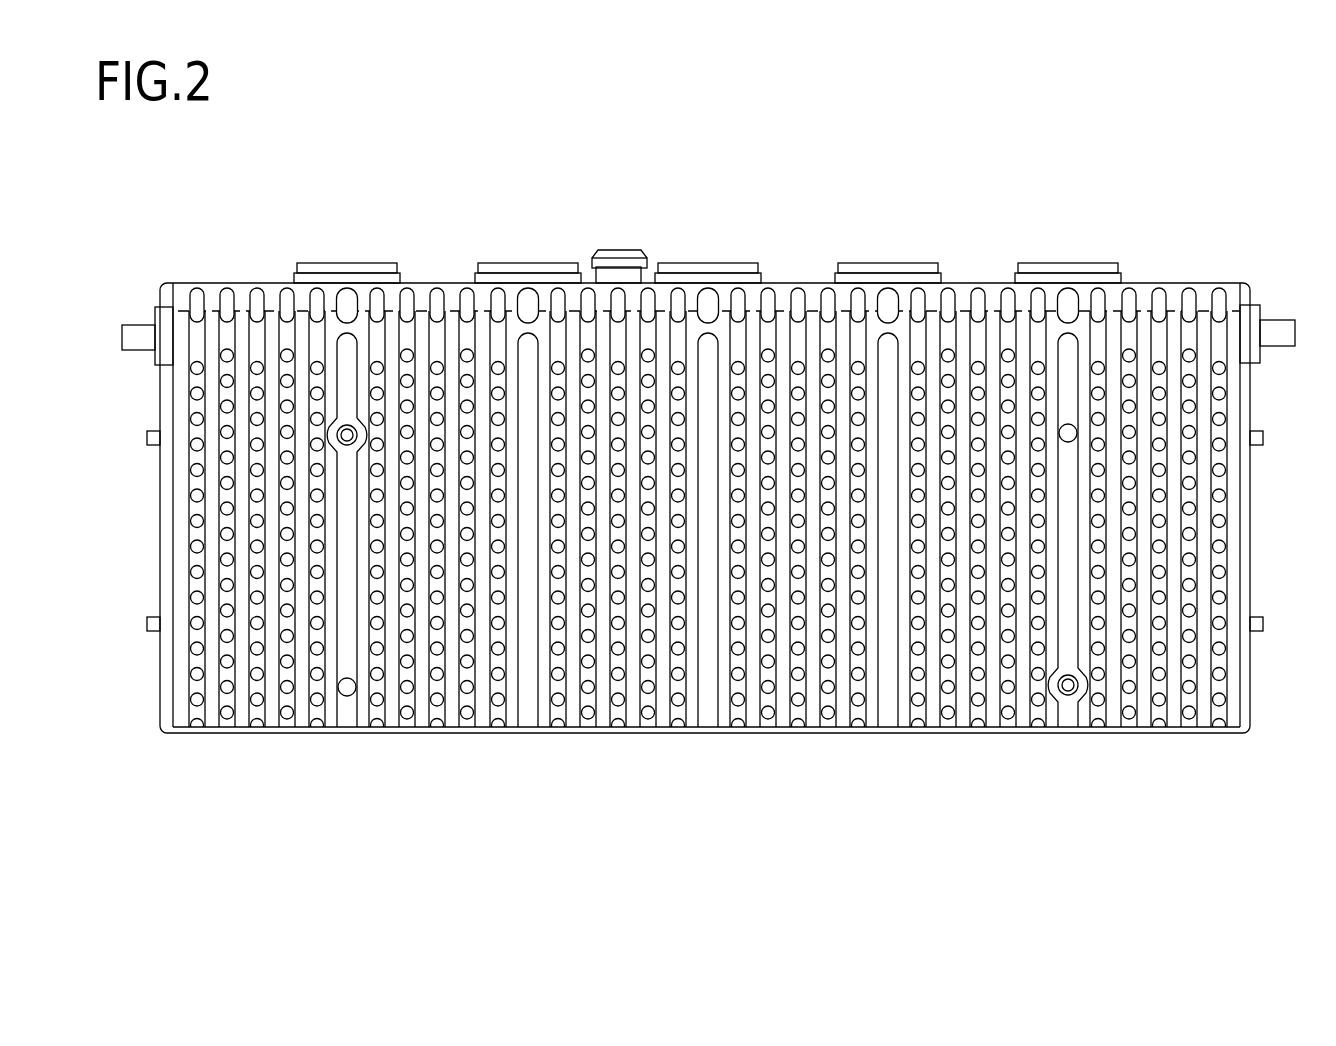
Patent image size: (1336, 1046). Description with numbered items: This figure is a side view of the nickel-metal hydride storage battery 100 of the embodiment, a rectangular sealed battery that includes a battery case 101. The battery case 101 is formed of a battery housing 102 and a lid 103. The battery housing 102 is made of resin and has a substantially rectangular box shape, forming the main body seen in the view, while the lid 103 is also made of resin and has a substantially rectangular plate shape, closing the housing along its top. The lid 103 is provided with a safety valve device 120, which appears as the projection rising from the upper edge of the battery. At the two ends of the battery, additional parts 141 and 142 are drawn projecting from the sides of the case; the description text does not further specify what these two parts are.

The nickel-metal hydride storage battery 100 is at (223, 255).
The battery case 101 is at (1278, 222).
The battery housing 102 is at (1221, 313).
The lid 103 is at (1152, 288).
The safety valve device 120 is at (625, 254).
The left connector 141 is at (135, 333).
The right connector 142 is at (1277, 327).